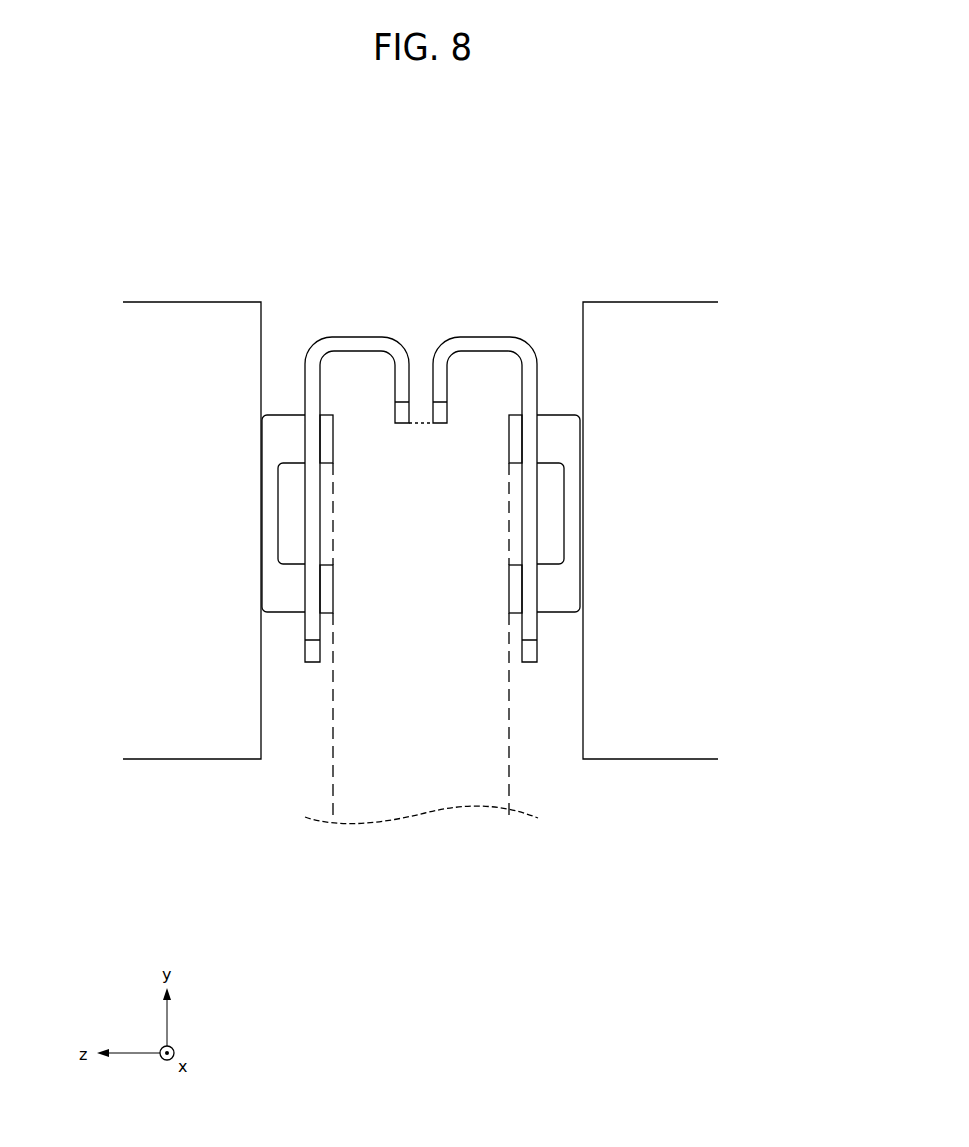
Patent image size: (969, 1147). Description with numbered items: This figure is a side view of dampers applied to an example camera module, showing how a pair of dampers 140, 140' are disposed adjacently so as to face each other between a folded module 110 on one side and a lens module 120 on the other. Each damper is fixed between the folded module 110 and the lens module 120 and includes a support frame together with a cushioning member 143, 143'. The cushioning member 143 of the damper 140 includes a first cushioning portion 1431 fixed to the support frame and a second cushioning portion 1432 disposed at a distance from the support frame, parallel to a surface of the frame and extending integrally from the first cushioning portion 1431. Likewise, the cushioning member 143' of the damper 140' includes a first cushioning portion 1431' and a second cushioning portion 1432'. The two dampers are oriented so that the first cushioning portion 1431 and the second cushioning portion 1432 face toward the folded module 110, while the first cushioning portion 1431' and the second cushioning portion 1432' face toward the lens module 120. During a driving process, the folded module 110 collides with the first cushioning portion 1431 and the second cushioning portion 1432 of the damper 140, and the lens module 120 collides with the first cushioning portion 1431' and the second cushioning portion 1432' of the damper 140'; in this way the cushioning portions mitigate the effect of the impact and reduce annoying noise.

The folded module 110 is at (190, 296).
The lens module 120 is at (652, 296).
The damper 140 is at (357, 537).
The damper 140' is at (485, 537).
The cushioning member 143 is at (194, 510).
The first cushioning portion 1431 is at (222, 510).
The second cushioning portion 1432 is at (222, 513).
The cushioning member 143' is at (651, 511).
The first cushioning portion 1431' is at (621, 511).
The second cushioning portion 1432' is at (621, 513).